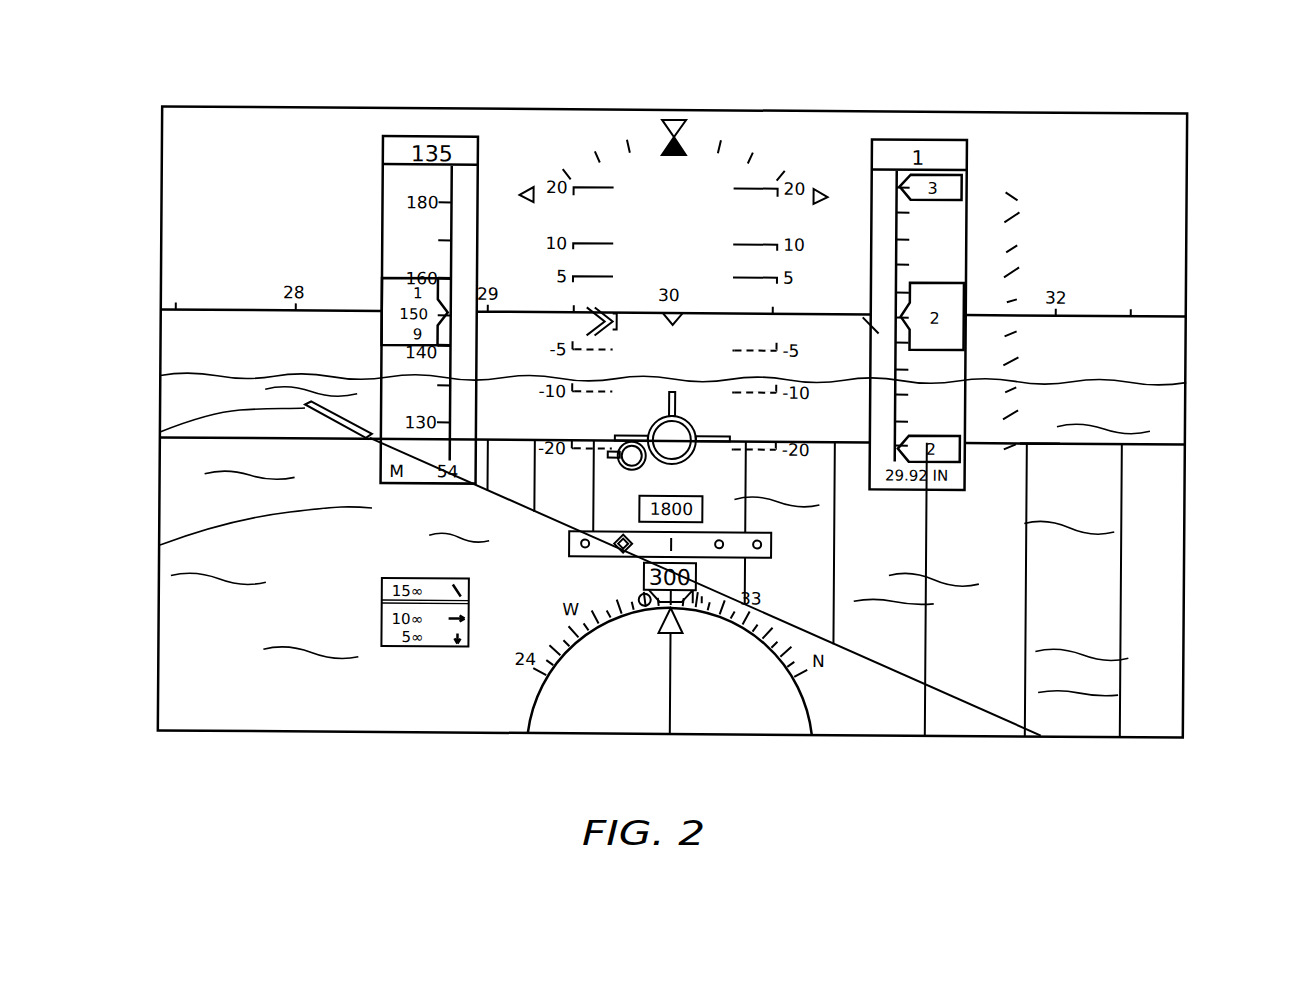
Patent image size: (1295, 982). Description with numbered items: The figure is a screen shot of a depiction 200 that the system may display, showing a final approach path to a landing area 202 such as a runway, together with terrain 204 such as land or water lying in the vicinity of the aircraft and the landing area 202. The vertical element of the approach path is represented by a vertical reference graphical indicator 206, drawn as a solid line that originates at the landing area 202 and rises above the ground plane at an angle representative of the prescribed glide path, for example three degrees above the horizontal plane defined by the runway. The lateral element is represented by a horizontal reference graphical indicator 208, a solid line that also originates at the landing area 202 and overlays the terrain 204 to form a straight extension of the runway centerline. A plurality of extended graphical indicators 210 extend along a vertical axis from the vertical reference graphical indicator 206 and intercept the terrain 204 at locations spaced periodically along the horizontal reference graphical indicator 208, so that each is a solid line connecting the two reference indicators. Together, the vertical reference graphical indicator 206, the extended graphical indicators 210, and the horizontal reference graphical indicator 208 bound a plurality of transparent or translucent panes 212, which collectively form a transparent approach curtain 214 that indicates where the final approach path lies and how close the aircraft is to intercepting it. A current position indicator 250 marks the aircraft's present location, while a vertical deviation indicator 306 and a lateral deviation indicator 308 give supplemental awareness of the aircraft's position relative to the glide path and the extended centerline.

The depiction 200 is at (293, 88).
The landing area 202 is at (160, 432).
The terrain 204 is at (160, 545).
The vertical reference graphical indicator 206 is at (1155, 443).
The horizontal reference graphical indicator 208 is at (983, 712).
The extended graphical indicators 210 is at (1027, 490).
The panes 212 is at (896, 628).
The approach curtain 214 is at (1043, 441).
The current position indicator 250 is at (684, 416).
The vertical deviation indicator 306 is at (1088, 313).
The lateral deviation indicator 308 is at (742, 548).